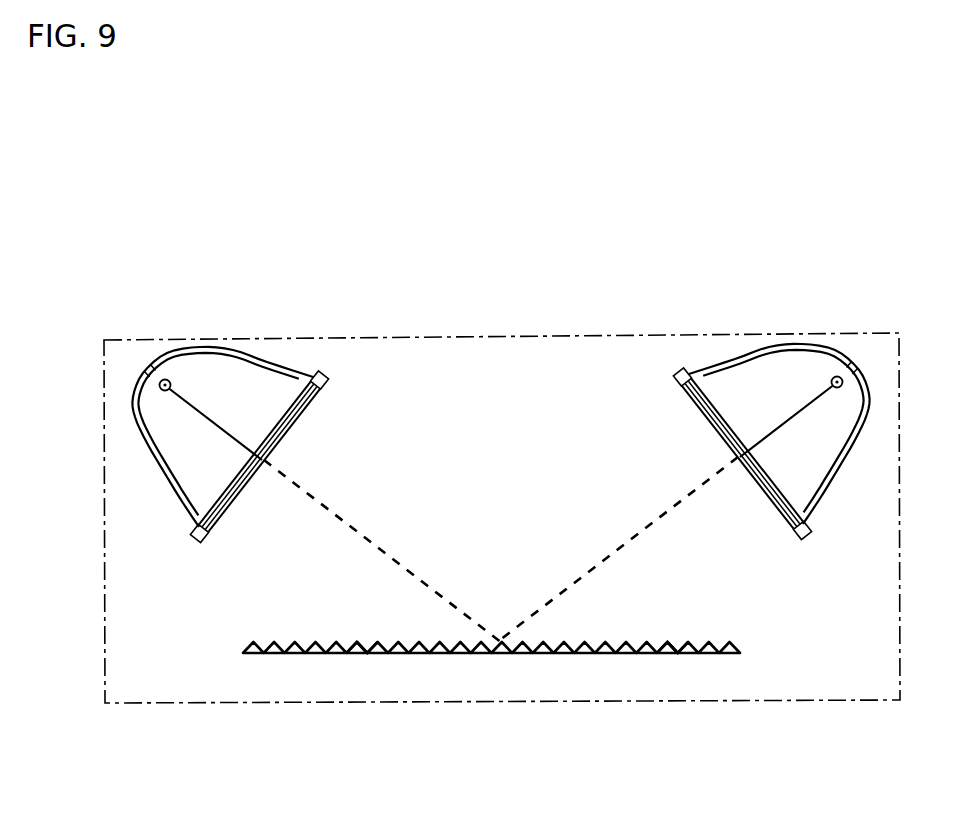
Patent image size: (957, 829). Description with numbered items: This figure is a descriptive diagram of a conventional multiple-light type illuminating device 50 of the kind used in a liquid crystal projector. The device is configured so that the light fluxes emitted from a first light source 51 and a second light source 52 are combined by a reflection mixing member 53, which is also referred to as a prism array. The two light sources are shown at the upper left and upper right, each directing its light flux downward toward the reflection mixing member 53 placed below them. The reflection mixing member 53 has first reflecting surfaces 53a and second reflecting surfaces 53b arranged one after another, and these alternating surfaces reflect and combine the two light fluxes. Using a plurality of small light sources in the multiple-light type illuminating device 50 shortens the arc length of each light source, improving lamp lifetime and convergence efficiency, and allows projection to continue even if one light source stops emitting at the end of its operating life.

The multiple-light type illuminating device 50 is at (230, 337).
The first light source 51 is at (180, 503).
The second light source 52 is at (825, 491).
The reflection mixing member 53 is at (740, 643).
The first reflecting surfaces 53a is at (352, 643).
The second reflecting surfaces 53b is at (363, 643).